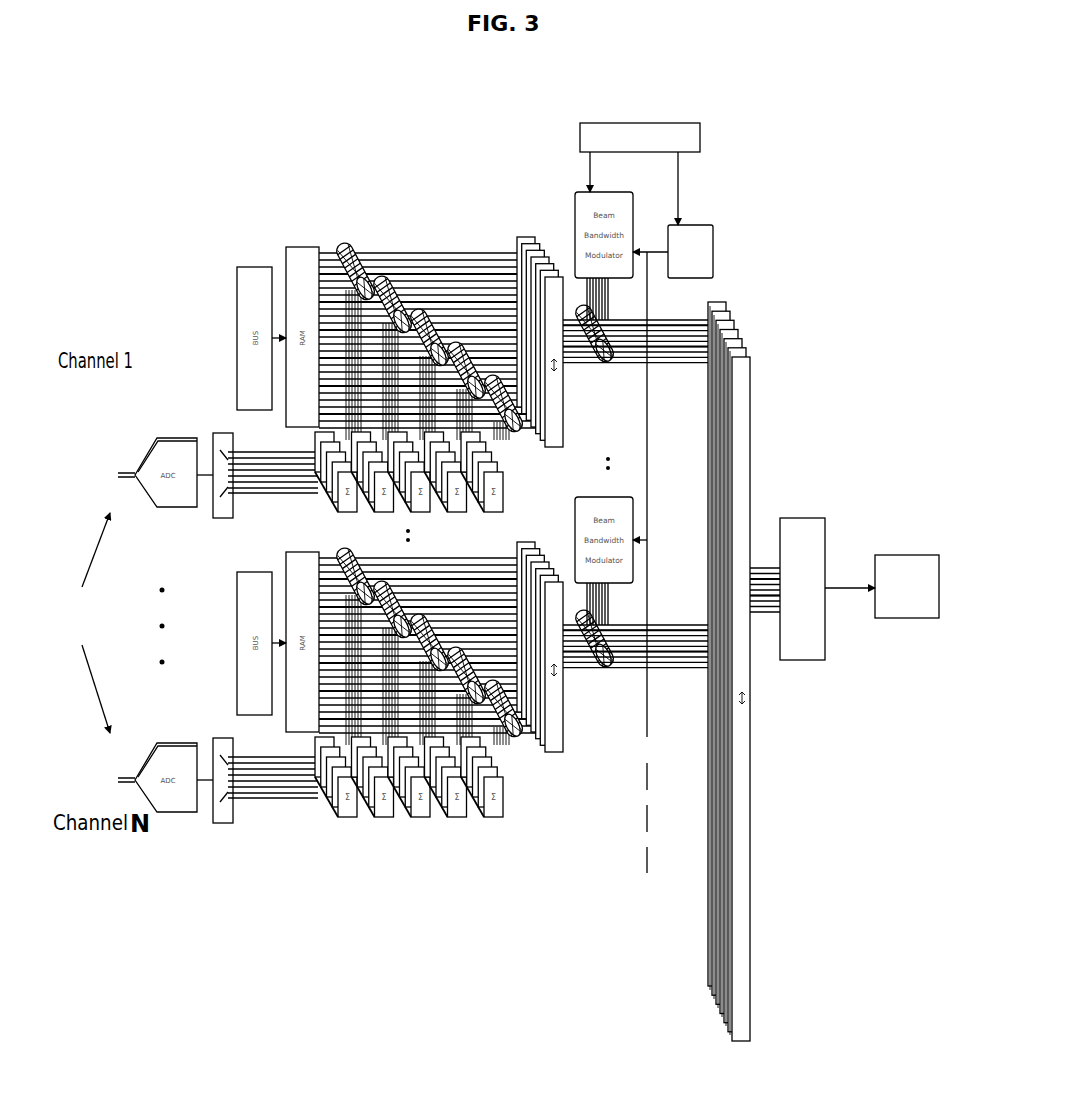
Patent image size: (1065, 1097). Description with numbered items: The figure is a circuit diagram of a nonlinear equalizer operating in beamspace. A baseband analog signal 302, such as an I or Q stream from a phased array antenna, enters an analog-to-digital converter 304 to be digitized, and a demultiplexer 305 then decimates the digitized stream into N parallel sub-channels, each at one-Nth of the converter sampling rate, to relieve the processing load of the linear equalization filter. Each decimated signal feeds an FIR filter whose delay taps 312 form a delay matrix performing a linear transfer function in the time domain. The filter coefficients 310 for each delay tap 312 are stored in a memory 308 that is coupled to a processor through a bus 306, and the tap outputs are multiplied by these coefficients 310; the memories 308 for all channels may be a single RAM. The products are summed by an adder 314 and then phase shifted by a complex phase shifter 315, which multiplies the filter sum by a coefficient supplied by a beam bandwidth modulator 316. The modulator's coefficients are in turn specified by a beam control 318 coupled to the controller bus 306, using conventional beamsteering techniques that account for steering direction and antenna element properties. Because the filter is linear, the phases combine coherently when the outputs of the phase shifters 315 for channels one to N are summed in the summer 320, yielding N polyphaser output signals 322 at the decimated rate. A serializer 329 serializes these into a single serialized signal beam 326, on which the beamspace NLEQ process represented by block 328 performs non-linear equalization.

The baseband analog signal 302 is at (45, 578).
The analog-to-digital converter 304 is at (172, 438).
The demultiplexer 305 is at (213, 515).
The bus 306 is at (580, 130).
The memory 308 is at (308, 247).
The filter coefficients 310 is at (343, 236).
The delay taps 312 is at (313, 437).
The adder 314 is at (520, 236).
The complex phase shifter 315 is at (600, 380).
The beam bandwidth modulator 316 is at (632, 188).
The beam control 318 is at (715, 245).
The summer 320 is at (738, 320).
The polyphaser output signals 322 is at (764, 558).
The serialized signal beam 326 is at (843, 590).
The beamspace NLEQ block 328 is at (905, 555).
The serializer 329 is at (797, 663).